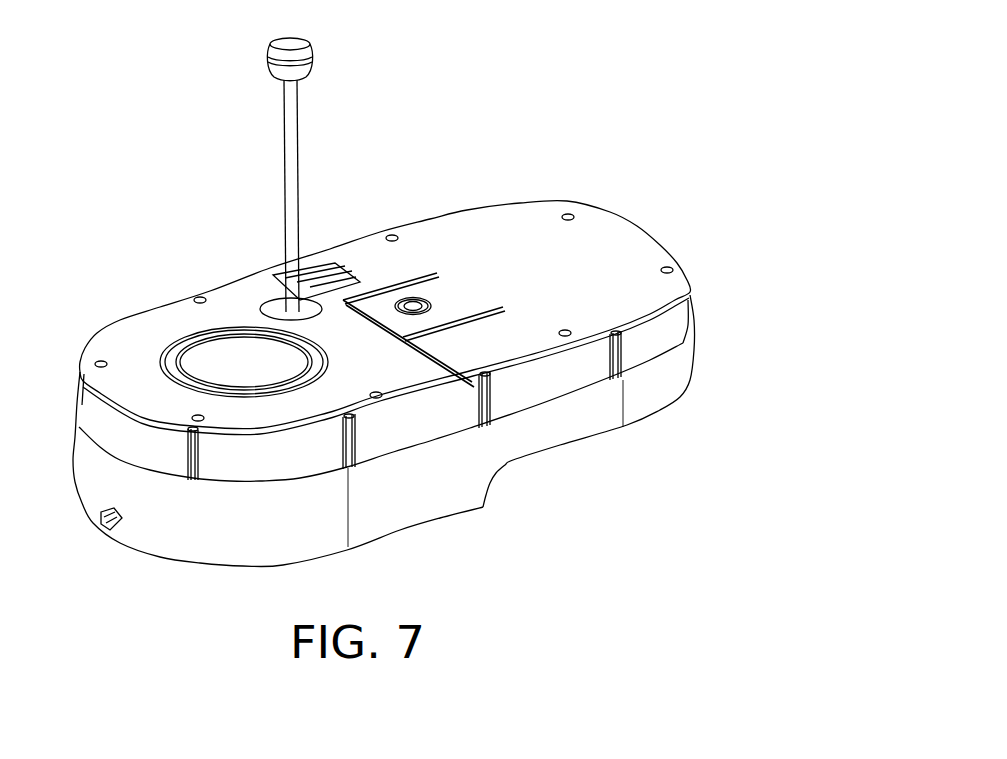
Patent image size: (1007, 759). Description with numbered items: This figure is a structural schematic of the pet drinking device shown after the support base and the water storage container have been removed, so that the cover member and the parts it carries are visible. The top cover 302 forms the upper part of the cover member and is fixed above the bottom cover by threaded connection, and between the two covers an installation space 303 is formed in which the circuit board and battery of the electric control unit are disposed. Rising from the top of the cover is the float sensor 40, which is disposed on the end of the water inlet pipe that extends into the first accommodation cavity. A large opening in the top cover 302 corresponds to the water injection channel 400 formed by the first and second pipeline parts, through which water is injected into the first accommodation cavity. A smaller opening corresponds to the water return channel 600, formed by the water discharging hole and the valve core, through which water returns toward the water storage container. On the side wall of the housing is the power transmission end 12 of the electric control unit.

The float sensor 40 is at (313, 63).
The water return channel 600 is at (413, 300).
The top cover 302 is at (603, 247).
The installation space 303 is at (687, 357).
The water injection channel 400 is at (232, 372).
The power transmission end 12 is at (103, 514).